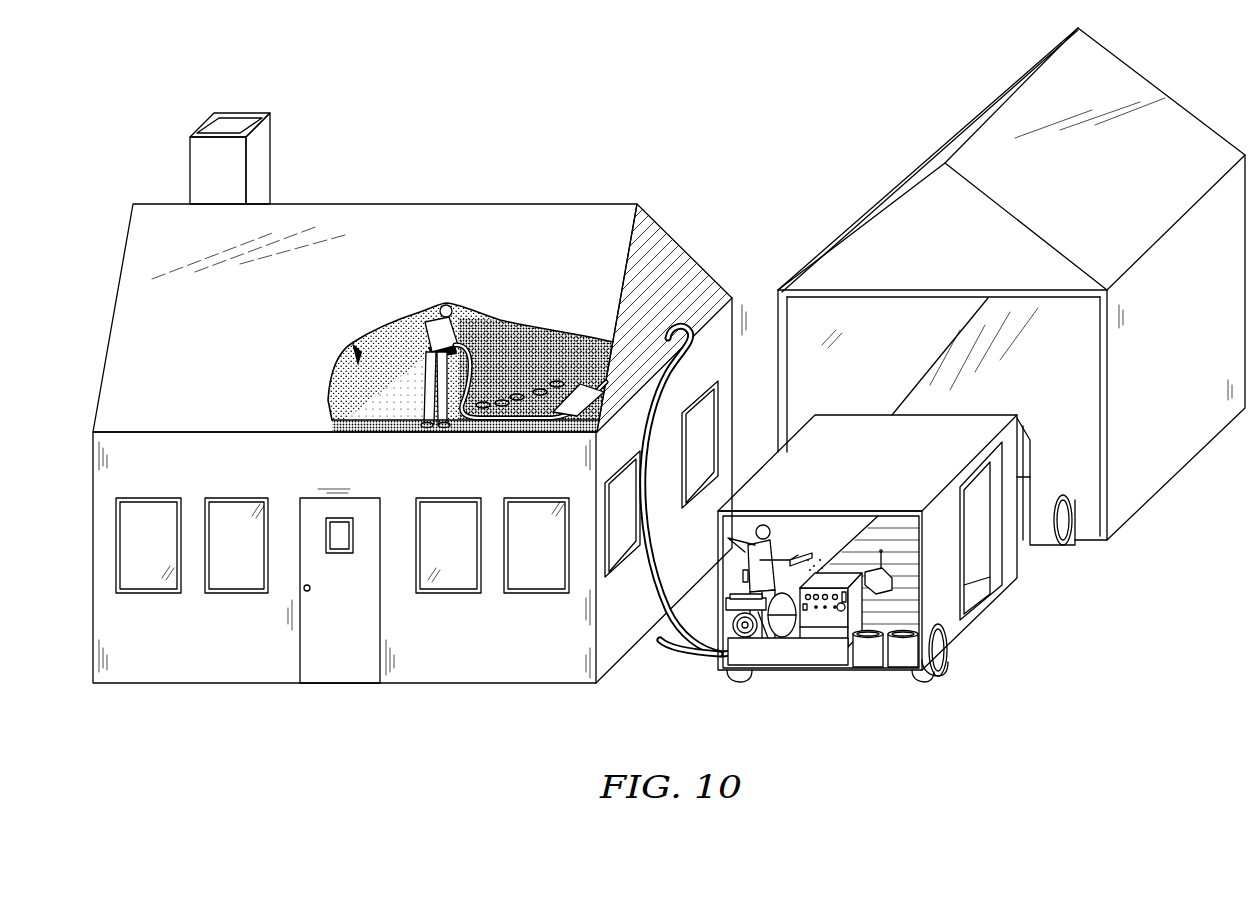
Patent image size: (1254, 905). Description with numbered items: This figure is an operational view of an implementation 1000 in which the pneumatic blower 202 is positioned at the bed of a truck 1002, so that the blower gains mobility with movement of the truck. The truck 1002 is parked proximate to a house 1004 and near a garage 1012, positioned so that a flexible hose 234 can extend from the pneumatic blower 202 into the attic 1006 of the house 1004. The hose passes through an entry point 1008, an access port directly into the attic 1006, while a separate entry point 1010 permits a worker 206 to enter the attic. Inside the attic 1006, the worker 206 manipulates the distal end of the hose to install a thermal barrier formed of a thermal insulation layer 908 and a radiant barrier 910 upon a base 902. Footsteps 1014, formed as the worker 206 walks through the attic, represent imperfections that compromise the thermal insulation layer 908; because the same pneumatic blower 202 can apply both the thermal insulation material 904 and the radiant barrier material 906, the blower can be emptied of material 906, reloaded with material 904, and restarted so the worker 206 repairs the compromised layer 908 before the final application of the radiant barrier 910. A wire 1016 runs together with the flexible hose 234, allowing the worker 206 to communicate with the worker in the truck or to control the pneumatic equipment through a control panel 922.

The implementation 1000 is at (881, 116).
The truck 1002 is at (1003, 590).
The house 1004 is at (410, 684).
The attic 1006 is at (352, 345).
The entry point 1008 is at (668, 312).
The entry point 1010 is at (573, 333).
The garage 1012 is at (878, 188).
The footsteps 1014 is at (550, 330).
The wire 1016 is at (685, 325).
The worker 206 is at (425, 318).
The base 902 is at (372, 432).
The thermal insulation layer 908 is at (532, 435).
The radiant barrier 910 is at (388, 435).
The flexible hose 234 is at (686, 660).
The pneumatic blower 202 is at (768, 690).
The control panel 922 is at (817, 620).
The material 906 is at (866, 668).
The material 904 is at (907, 667).